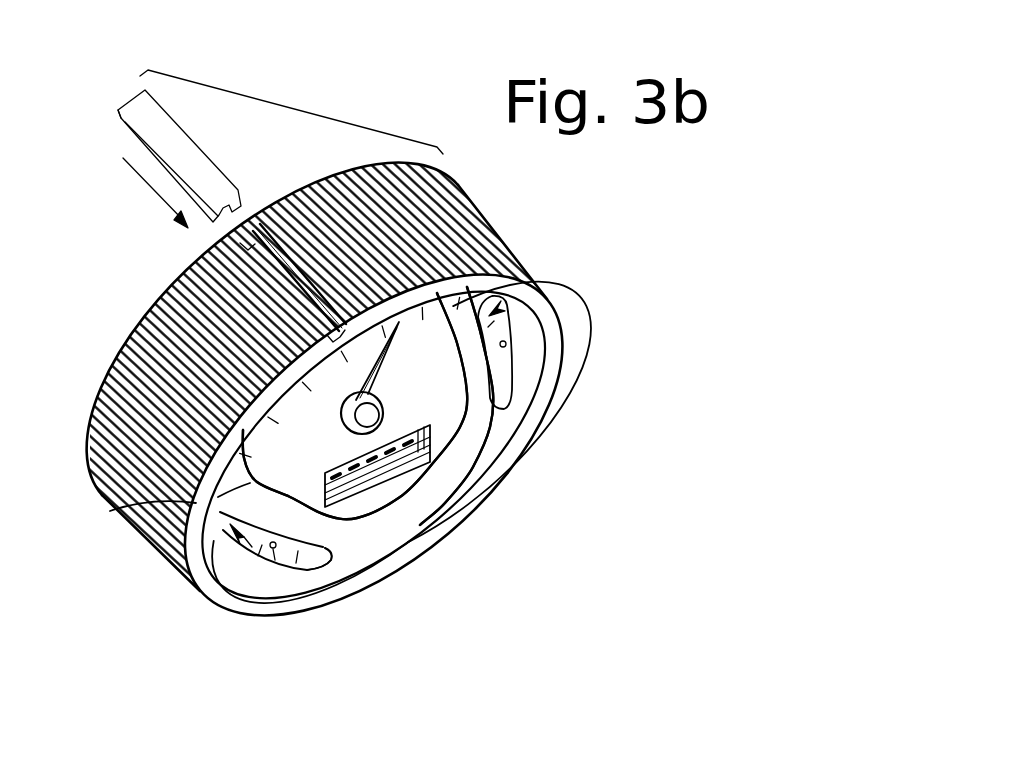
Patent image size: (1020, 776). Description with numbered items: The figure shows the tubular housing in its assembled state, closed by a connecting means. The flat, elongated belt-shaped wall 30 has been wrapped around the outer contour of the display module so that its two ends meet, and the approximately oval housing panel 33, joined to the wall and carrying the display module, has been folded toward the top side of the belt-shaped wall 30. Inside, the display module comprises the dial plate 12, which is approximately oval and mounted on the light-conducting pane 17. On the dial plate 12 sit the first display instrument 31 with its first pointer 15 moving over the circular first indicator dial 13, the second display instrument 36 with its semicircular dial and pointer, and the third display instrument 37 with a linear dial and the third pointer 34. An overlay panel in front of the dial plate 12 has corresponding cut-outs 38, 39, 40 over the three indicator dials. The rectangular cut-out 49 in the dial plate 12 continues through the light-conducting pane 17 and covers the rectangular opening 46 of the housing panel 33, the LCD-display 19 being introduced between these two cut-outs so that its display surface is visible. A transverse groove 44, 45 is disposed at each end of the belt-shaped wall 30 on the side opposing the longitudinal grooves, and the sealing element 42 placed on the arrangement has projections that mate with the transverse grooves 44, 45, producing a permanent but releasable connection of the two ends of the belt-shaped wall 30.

The dial plate 12 is at (452, 450).
The first indicator dial 13 is at (126, 519).
The first pointer 15 is at (345, 406).
The light-conducting pane 17 is at (468, 512).
The LCD-display 19 is at (431, 542).
The belt-shaped wall 30 is at (455, 216).
The first display instrument 31 is at (196, 383).
The housing panel 33 is at (333, 468).
The third pointer 34 is at (472, 300).
The second display instrument 36 is at (177, 554).
The third display instrument 37 is at (508, 336).
The cut-out 38 is at (331, 562).
The cut-out 39 is at (478, 468).
The cut-out 40 is at (521, 378).
The sealing element 42 is at (125, 124).
The transverse groove 44 is at (247, 252).
The transverse groove 45 is at (264, 243).
The rectangular opening 46 is at (500, 440).
The rectangular cut-out 49 is at (443, 406).